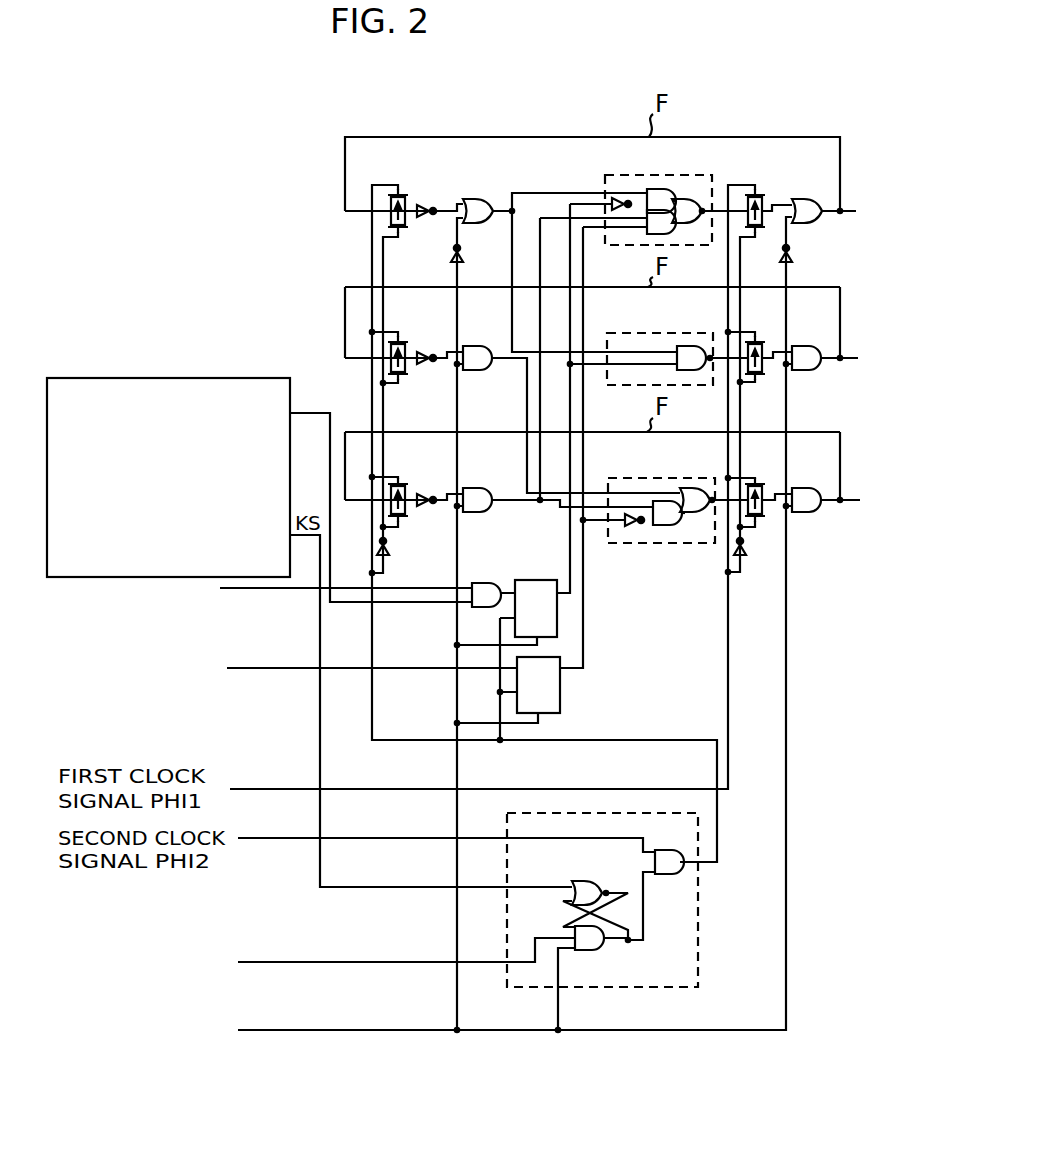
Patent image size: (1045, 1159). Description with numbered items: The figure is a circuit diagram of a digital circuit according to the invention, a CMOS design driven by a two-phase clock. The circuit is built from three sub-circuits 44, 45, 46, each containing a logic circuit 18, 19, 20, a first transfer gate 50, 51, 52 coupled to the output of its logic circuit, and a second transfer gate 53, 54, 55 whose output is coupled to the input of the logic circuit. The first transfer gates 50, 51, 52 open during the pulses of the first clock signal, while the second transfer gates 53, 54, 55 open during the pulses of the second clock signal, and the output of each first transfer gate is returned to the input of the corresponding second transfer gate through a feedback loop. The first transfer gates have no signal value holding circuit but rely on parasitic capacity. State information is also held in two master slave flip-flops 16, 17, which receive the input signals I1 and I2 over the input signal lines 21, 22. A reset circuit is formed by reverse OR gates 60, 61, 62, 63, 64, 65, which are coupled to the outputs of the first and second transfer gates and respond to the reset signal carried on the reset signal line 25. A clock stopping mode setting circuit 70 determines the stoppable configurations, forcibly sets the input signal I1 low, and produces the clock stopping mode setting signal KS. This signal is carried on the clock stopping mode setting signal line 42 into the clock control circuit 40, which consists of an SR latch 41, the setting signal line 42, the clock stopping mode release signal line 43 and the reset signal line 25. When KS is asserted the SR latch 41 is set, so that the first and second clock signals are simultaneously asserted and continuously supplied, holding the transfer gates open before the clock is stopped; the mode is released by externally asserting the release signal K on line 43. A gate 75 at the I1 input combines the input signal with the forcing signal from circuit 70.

The master slave flip-flop 16 is at (538, 579).
The master slave flip-flop 17 is at (565, 701).
The logic circuit 18 is at (677, 179).
The logic circuit 19 is at (675, 333).
The logic circuit 20 is at (675, 478).
The input signal line 21 is at (418, 587).
The input signal line 22 is at (418, 665).
The reset signal line 25 is at (612, 1030).
The clock control circuit 40 is at (612, 813).
The SR latch 41 is at (562, 918).
The clock stopping mode setting signal line 42 is at (527, 885).
The clock stopping mode release signal line 43 is at (520, 965).
The sub-circuit 44 is at (338, 180).
The sub-circuit 45 is at (342, 326).
The sub-circuit 46 is at (347, 440).
The first transfer gate 50 is at (754, 190).
The first transfer gate 51 is at (755, 345).
The first transfer gate 52 is at (760, 487).
The second transfer gate 53 is at (405, 190).
The second transfer gate 54 is at (410, 338).
The second transfer gate 55 is at (412, 487).
The reverse OR gate 60 is at (808, 190).
The reverse OR gate 61 is at (807, 345).
The reverse OR gate 62 is at (815, 488).
The reverse OR gate 63 is at (468, 194).
The reverse OR gate 64 is at (474, 338).
The reverse OR gate 65 is at (479, 487).
The clock stopping mode setting circuit 70 is at (152, 378).
The AND gate for input signal I1 75 is at (480, 579).